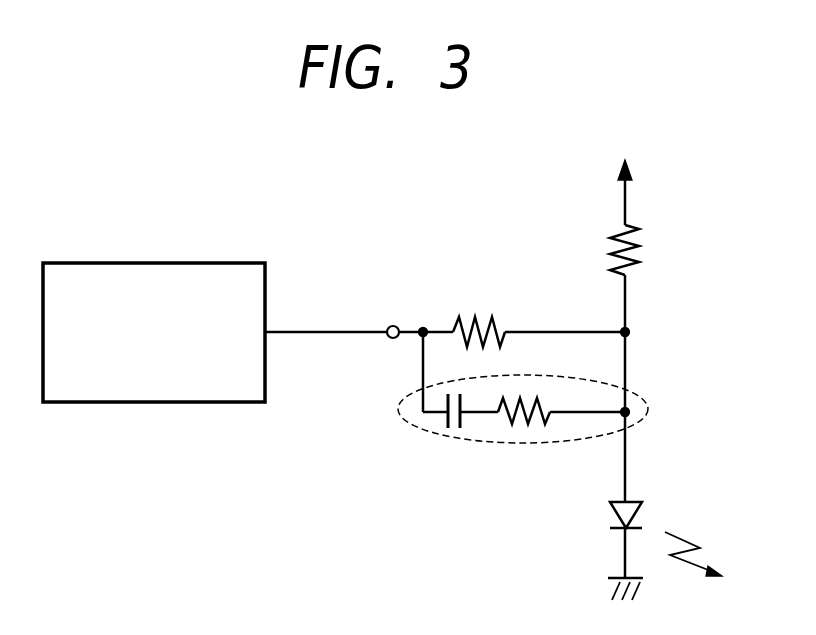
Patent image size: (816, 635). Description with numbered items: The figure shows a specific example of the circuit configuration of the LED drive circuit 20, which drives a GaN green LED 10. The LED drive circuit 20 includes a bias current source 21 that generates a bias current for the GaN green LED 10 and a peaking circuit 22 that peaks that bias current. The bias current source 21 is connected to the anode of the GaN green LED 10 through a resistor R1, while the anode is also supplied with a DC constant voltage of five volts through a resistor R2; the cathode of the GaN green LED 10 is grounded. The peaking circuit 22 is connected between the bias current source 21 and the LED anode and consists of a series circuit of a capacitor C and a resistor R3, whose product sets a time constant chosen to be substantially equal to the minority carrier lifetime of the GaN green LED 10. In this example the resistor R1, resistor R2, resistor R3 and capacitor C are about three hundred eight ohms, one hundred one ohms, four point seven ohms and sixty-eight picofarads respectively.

The LED drive circuit 20 is at (231, 190).
The bias current source 21 is at (193, 263).
The peaking circuit 22 is at (423, 430).
The GaN green LED 10 is at (612, 517).
The resistor R1 is at (479, 323).
The resistor R2 is at (637, 242).
The resistor R3 is at (522, 426).
The capacitor C is at (454, 429).